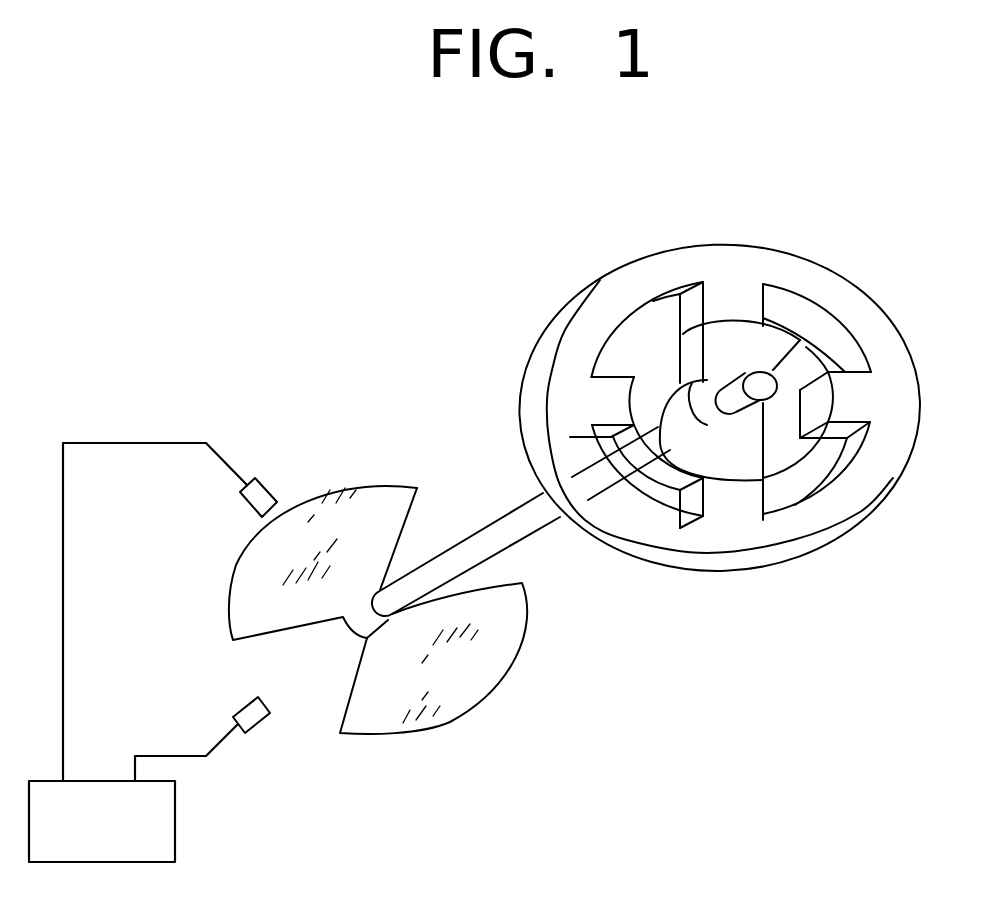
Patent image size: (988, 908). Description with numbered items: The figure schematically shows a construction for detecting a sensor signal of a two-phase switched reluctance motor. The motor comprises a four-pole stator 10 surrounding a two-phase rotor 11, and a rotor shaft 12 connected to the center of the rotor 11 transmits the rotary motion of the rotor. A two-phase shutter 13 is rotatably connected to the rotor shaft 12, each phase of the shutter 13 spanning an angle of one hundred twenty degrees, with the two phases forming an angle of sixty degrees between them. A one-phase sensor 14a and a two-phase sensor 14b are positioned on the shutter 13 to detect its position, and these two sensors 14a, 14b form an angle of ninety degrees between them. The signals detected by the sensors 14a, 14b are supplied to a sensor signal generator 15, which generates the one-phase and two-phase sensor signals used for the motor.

The 4-pole stator 10 is at (752, 248).
The 2-phase rotor 11 is at (753, 452).
The rotor shaft 12 is at (470, 536).
The 2-phase shutter 13 is at (246, 564).
The 1-phase sensor 14a is at (274, 504).
The 2-phase sensor 14b is at (240, 709).
The sensor signal generator 15 is at (175, 815).